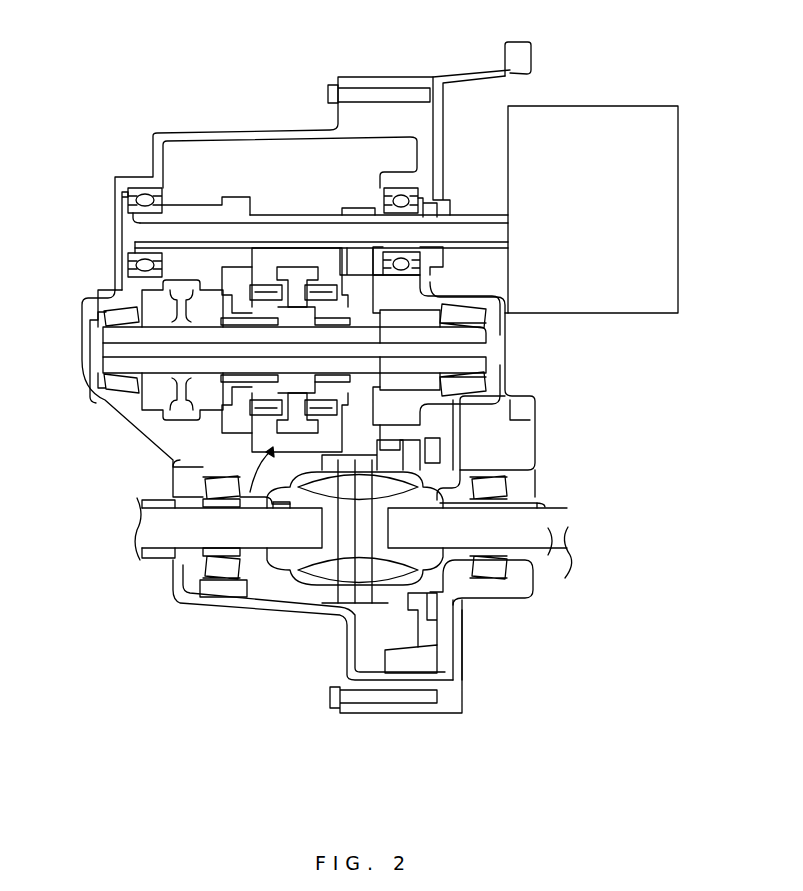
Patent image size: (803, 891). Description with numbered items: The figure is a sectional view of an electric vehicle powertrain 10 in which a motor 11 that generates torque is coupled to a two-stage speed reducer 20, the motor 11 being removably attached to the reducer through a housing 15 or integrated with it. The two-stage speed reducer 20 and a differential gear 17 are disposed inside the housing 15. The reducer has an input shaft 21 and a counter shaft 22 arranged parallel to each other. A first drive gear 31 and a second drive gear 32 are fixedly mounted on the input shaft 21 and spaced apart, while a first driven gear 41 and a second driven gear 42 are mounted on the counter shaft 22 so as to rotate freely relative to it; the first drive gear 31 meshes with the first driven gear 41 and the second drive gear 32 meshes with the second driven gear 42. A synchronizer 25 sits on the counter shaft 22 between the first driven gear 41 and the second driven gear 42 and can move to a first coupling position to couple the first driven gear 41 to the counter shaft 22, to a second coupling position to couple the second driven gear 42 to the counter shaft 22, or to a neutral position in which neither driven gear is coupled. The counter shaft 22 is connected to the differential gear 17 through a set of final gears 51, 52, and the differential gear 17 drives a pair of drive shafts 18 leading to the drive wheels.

The electric vehicle powertrain 10 is at (58, 56).
The motor 11 is at (680, 207).
The housing 15 is at (248, 132).
The differential gear 17 is at (318, 605).
The drive shafts 18 is at (258, 545).
The two-stage speed reducer 20 is at (314, 190).
The input shaft 21 is at (330, 220).
The counter shaft 22 is at (205, 488).
The synchronizer 25 is at (200, 480).
The first drive gear 31 is at (356, 210).
The second drive gear 32 is at (236, 195).
The first driven gear 41 is at (380, 436).
The second driven gear 42 is at (230, 431).
The final gear 51 is at (416, 306).
The final gear 52 is at (425, 398).